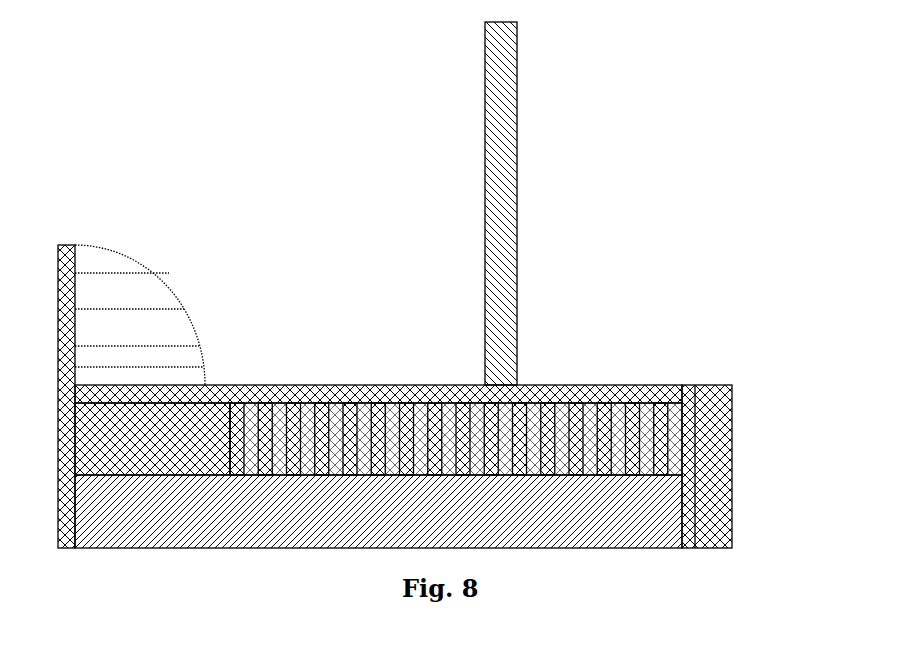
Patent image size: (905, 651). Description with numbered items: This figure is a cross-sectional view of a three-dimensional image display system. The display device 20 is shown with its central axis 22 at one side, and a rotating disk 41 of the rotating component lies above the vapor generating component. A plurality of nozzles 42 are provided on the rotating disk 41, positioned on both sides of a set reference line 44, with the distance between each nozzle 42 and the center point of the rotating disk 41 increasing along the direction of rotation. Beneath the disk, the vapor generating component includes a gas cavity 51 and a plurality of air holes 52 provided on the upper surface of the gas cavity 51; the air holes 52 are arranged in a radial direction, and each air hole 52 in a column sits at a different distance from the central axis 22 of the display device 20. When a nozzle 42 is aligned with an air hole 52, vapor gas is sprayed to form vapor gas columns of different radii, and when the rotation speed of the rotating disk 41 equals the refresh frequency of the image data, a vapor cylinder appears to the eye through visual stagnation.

The display device 20 is at (128, 290).
The central axis 22 is at (65, 262).
The rotating disk 41 is at (600, 405).
The nozzle 42 is at (495, 405).
The set reference line 44 is at (500, 268).
The gas cavity 51 is at (682, 505).
The air hole 52 is at (648, 435).